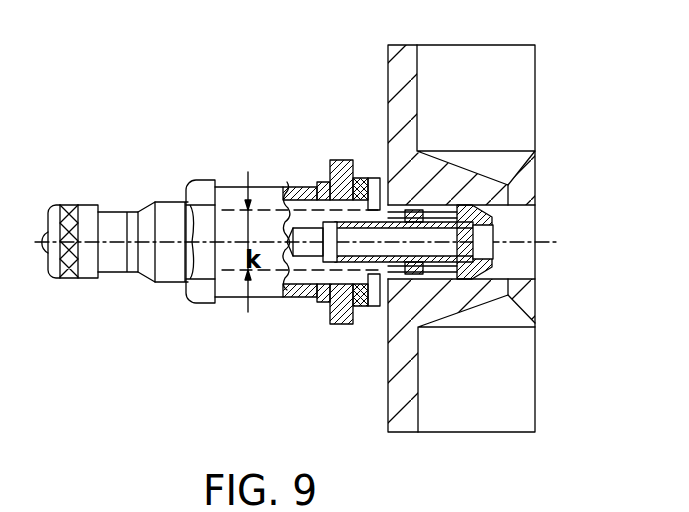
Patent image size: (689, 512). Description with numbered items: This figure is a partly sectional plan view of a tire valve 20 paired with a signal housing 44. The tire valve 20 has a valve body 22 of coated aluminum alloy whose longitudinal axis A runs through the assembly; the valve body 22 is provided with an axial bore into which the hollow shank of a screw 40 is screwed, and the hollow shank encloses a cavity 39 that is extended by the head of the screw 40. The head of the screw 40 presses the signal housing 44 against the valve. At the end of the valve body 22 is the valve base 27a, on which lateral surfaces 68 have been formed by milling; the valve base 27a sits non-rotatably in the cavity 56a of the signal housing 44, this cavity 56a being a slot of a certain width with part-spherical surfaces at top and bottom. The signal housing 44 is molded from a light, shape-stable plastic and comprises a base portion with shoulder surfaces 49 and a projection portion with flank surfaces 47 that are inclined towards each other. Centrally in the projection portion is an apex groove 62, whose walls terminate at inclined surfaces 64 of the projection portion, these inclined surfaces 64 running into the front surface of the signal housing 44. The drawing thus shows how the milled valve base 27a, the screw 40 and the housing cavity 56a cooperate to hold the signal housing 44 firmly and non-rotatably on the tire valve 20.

The tire valve 20 is at (128, 220).
The longitudinal axis A is at (113, 243).
The valve body 22 is at (306, 282).
The valve base 27a is at (380, 308).
The signal housing 44 is at (496, 222).
The shoulder surfaces 49 is at (492, 89).
The inclined surfaces 64 is at (525, 187).
The apex groove 62 is at (528, 224).
The cavity 39 is at (493, 250).
The screw 40 is at (493, 267).
The flank surfaces 47 is at (513, 322).
The cavity 56a is at (413, 213).
The lateral surfaces 68 is at (405, 268).